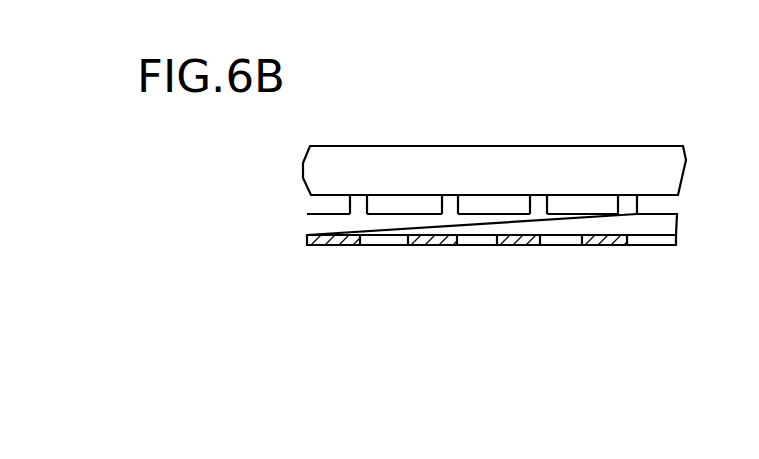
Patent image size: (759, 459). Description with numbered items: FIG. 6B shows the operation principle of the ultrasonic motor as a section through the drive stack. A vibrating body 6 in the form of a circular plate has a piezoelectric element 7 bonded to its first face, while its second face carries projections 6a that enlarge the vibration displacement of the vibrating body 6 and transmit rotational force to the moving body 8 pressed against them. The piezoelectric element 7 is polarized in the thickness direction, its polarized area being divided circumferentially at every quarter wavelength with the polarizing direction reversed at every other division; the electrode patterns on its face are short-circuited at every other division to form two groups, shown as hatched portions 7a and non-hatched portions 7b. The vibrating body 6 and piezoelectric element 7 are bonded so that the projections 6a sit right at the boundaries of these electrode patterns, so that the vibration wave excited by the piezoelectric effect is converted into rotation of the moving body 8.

The moving body 8 is at (663, 173).
The vibrating body 6 is at (663, 222).
The projections 6a is at (360, 204).
The piezoelectric element 7 is at (663, 242).
The hatched electrode segments 7a is at (327, 246).
The non-hatched electrode segments 7b is at (383, 246).